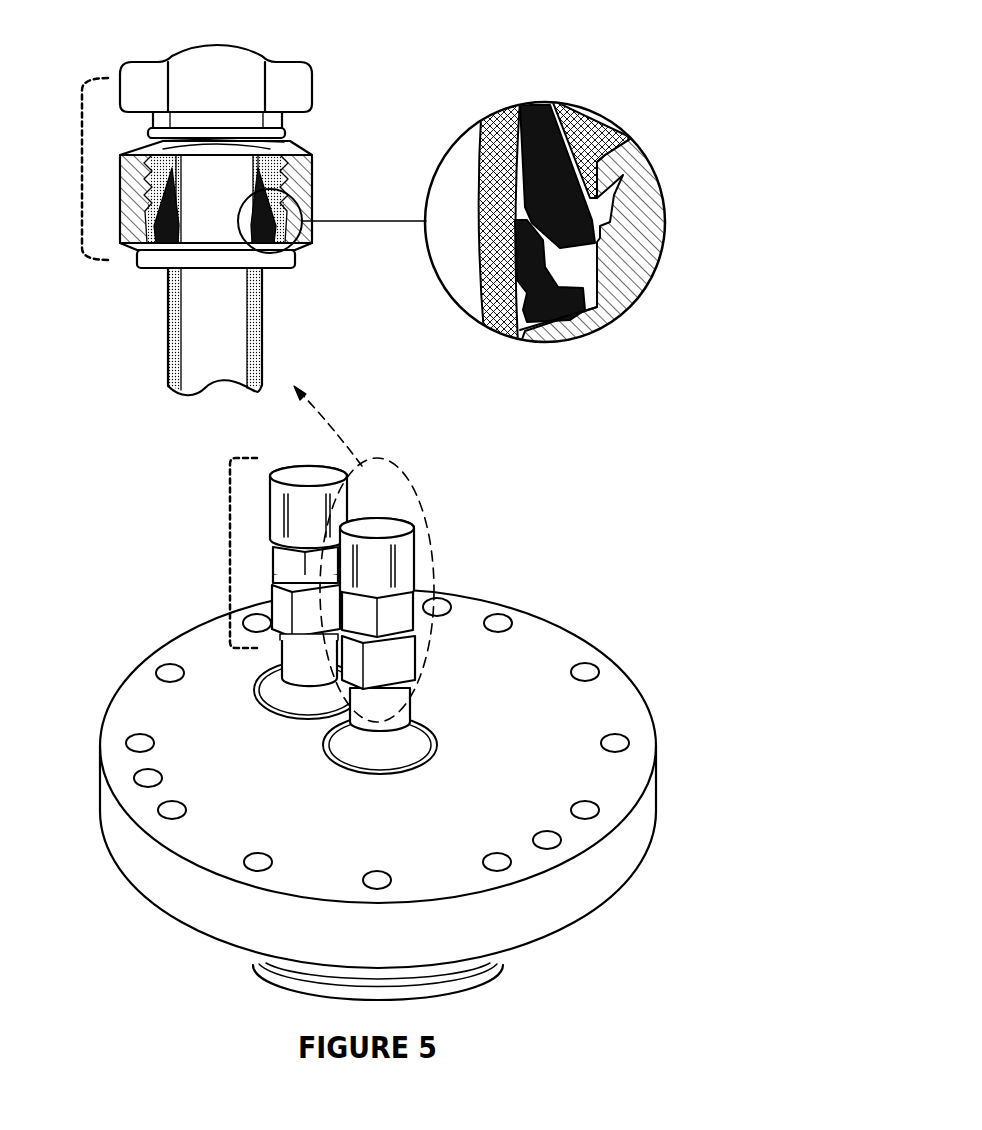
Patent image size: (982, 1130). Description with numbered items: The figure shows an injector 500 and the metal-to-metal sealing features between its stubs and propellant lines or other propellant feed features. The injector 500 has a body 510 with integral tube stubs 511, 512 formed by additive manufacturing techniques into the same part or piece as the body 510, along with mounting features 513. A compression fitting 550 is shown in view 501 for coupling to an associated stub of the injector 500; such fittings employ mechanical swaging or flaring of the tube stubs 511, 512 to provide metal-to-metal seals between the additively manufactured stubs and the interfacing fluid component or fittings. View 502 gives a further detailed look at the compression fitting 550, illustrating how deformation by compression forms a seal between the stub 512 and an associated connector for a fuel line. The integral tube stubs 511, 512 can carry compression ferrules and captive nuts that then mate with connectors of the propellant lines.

The injector 500 is at (416, 754).
The view 501 is at (122, 33).
The view 502 is at (638, 118).
The body 510 is at (606, 853).
The tube stub 511 is at (303, 657).
The tube stub 512 is at (168, 311).
The mounting features 513 is at (603, 668).
The compression fitting 550 is at (80, 168).